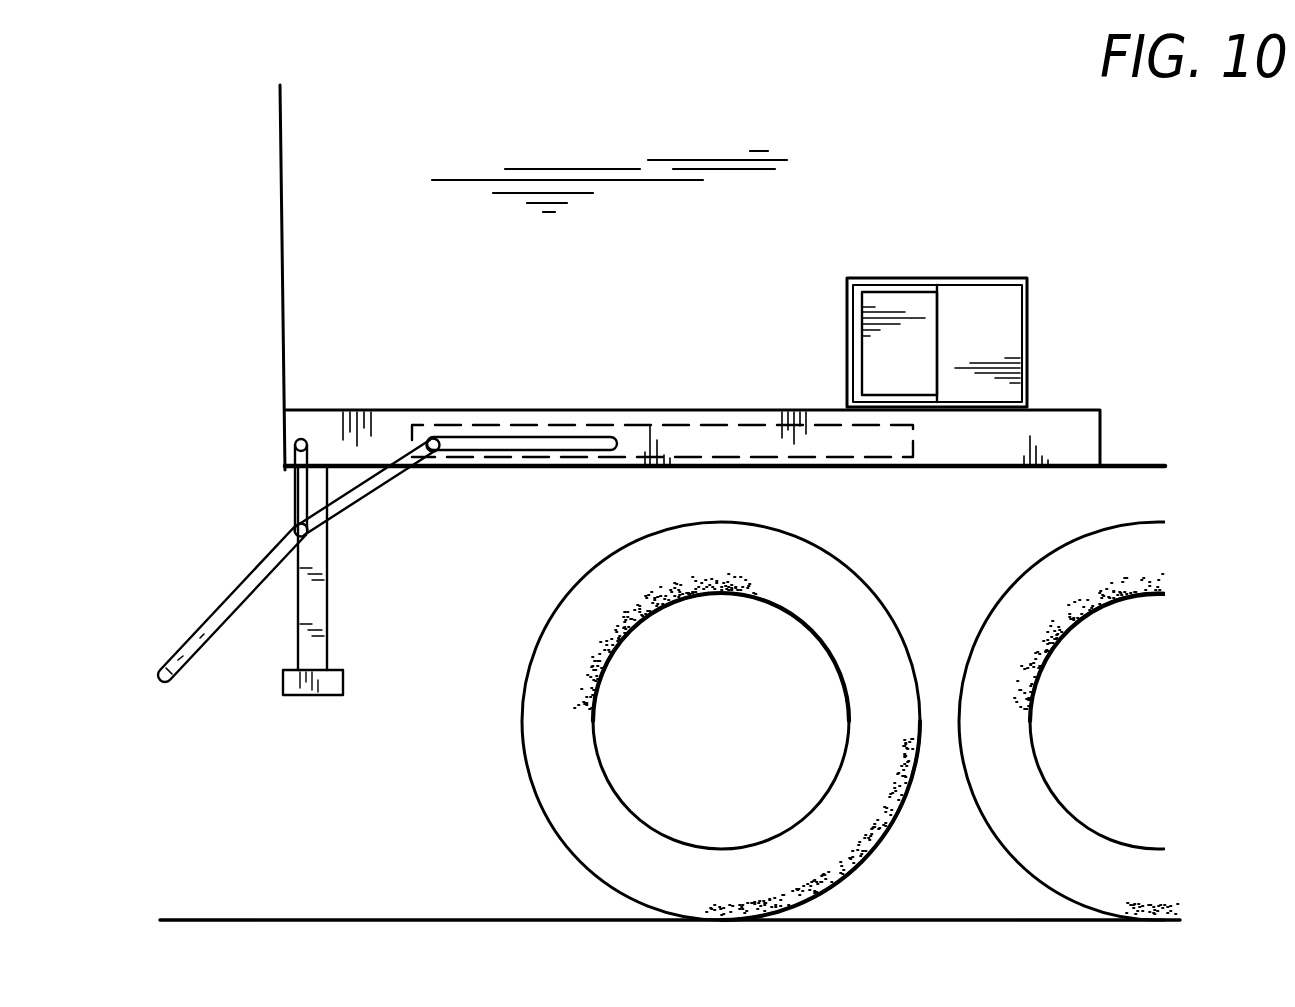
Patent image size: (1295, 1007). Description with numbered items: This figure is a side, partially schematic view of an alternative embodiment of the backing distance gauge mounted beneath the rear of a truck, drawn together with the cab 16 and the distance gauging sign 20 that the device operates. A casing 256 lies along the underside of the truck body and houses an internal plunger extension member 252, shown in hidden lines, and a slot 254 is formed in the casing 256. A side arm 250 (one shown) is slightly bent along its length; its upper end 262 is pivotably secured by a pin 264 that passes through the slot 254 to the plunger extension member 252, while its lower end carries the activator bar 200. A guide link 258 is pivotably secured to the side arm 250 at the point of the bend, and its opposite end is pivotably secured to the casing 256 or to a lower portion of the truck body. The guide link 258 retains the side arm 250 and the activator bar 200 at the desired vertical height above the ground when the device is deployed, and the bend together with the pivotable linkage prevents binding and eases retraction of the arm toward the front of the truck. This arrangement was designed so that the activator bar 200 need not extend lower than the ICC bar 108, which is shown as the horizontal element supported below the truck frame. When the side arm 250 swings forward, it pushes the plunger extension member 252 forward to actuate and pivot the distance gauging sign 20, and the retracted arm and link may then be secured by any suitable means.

The cab 16 is at (971, 278).
The distance gauging sign 20 is at (893, 298).
The ICC bar 108 is at (326, 600).
The activator bar 200 is at (160, 669).
The side arm 250 is at (214, 655).
The internal plunger extension member 252 is at (716, 435).
The slot 254 is at (535, 445).
The casing 256 is at (382, 430).
The guide link 258 is at (295, 486).
The upper end 262 is at (403, 478).
The pin 264 is at (440, 450).